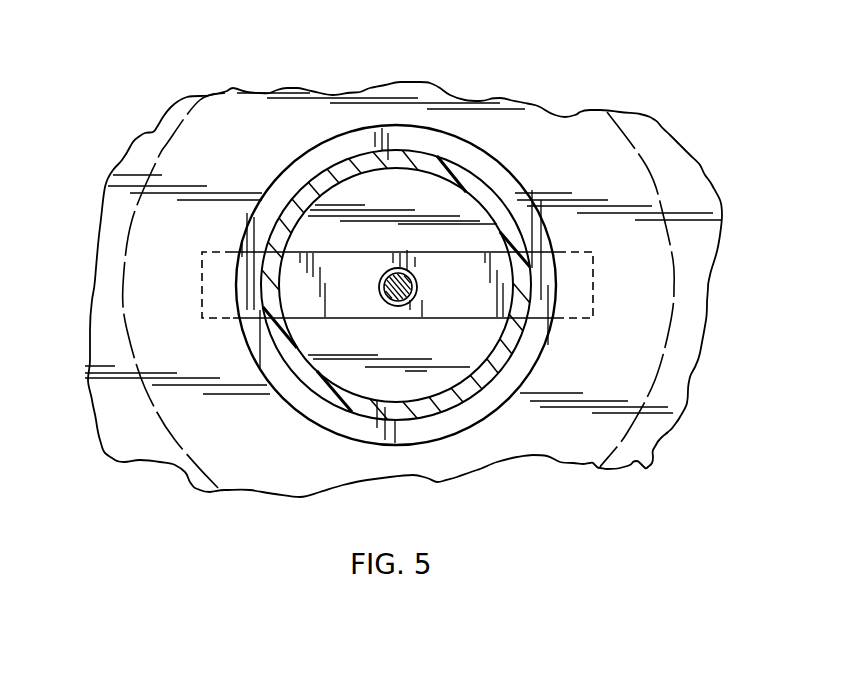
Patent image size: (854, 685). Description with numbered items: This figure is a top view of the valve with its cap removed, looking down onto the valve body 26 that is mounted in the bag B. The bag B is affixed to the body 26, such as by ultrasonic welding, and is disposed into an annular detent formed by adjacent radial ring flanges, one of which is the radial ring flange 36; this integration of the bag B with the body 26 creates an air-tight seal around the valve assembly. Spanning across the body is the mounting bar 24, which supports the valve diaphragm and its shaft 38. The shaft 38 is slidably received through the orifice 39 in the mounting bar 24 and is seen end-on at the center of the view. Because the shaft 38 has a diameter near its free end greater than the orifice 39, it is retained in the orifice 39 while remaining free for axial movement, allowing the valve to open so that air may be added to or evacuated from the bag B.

The bag B is at (137, 139).
The radial ring flange 36 is at (323, 152).
The valve body 26 is at (447, 167).
The mounting bar 24 is at (467, 265).
The shaft 38 is at (388, 300).
The orifice 39 is at (420, 283).